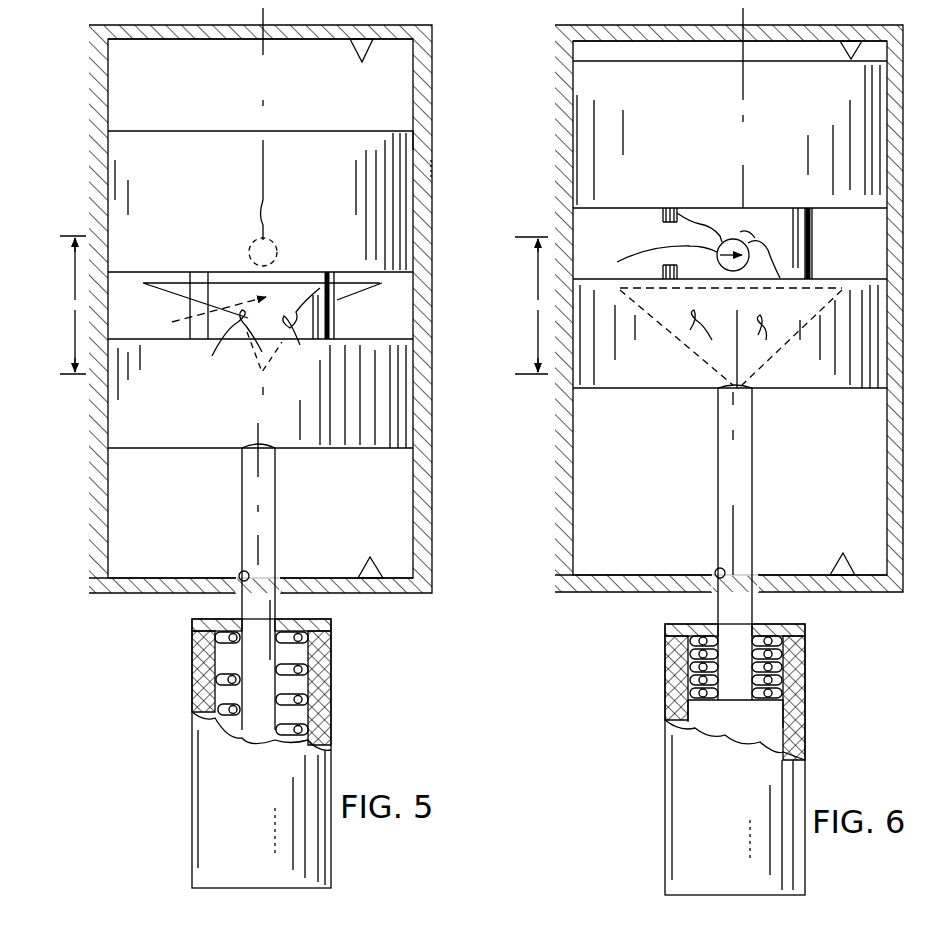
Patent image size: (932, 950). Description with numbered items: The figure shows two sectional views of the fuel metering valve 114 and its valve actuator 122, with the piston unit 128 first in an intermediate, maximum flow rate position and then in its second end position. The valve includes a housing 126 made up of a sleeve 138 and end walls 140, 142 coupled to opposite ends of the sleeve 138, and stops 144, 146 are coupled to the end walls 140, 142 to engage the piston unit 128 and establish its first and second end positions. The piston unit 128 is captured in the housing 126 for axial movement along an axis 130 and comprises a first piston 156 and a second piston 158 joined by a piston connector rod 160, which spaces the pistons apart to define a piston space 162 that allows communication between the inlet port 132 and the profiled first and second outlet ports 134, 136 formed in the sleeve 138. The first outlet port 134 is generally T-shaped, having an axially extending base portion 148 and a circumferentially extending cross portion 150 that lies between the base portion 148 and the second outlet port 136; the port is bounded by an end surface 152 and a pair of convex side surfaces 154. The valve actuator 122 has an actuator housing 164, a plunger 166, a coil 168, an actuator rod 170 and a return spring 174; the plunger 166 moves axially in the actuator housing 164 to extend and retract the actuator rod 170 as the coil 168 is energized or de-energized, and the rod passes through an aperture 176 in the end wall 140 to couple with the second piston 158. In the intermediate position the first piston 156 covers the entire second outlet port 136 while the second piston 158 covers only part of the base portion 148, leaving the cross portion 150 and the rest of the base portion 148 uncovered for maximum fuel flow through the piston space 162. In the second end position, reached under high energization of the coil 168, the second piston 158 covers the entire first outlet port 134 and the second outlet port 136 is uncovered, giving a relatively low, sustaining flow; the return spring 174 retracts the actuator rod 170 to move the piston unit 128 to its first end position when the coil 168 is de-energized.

In FIG. 5, the fuel metering valve 114 is at (490, 648).
In FIG. 6, the fuel metering valve 114 is at (862, 622).
In FIG. 5, the valve actuator 122 is at (136, 748).
In FIG. 6, the valve actuator 122 is at (592, 748).
In FIG. 5, the housing 126 is at (448, 214).
In FIG. 6, the housing 126 is at (550, 470).
In FIG. 5, the piston unit 128 is at (364, 108).
In FIG. 6, the piston unit 128 is at (812, 422).
In FIG. 5, the axis 130 is at (265, 190).
In FIG. 6, the axis 130 is at (718, 530).
In FIG. 5, the inlet port 132 is at (75, 330).
In FIG. 6, the inlet port 132 is at (538, 328).
In FIG. 5, the first outlet port 134 is at (293, 282).
In FIG. 6, the first outlet port 134 is at (676, 306).
In FIG. 5, the second outlet port 136 is at (248, 246).
In FIG. 6, the second outlet port 136 is at (712, 230).
In FIG. 5, the sleeve 138 is at (89, 110).
In FIG. 6, the sleeve 138 is at (556, 110).
In FIG. 5, the end wall 140 is at (130, 595).
In FIG. 6, the end wall 140 is at (618, 593).
In FIG. 5, the end wall 142 is at (132, 36).
In FIG. 6, the end wall 142 is at (605, 33).
In FIG. 5, the stop 144 is at (360, 565).
In FIG. 6, the stop 144 is at (830, 563).
In FIG. 5, the stop 146 is at (355, 45).
In FIG. 6, the stop 146 is at (850, 48).
In FIG. 5, the base portion 148 is at (262, 346).
In FIG. 6, the base portion 148 is at (722, 352).
In FIG. 5, the cross portion 150 is at (168, 283).
In FIG. 6, the cross portion 150 is at (812, 292).
In FIG. 5, the end surface 152 is at (345, 290).
In FIG. 6, the end surface 152 is at (660, 292).
In FIG. 5, the convex side surfaces 154 is at (261, 328).
In FIG. 6, the convex side surfaces 154 is at (745, 338).
In FIG. 5, the first piston 156 is at (132, 136).
In FIG. 6, the first piston 156 is at (590, 210).
In FIG. 5, the second piston 158 is at (140, 438).
In FIG. 6, the second piston 158 is at (604, 390).
In FIG. 5, the piston connector rod 160 is at (336, 325).
In FIG. 6, the piston connector rod 160 is at (790, 222).
In FIG. 5, the piston space 162 is at (152, 340).
In FIG. 6, the piston space 162 is at (842, 215).
In FIG. 5, the actuator housing 164 is at (200, 828).
In FIG. 6, the actuator housing 164 is at (685, 822).
In FIG. 6, the plunger 166 is at (745, 735).
In FIG. 5, the coil 168 is at (331, 668).
In FIG. 6, the coil 168 is at (665, 672).
In FIG. 5, the actuator rod 170 is at (275, 520).
In FIG. 6, the actuator rod 170 is at (752, 492).
In FIG. 5, the return spring 174 is at (302, 702).
In FIG. 6, the return spring 174 is at (783, 680).
In FIG. 5, the aperture 176 is at (238, 572).
In FIG. 6, the aperture 176 is at (714, 573).